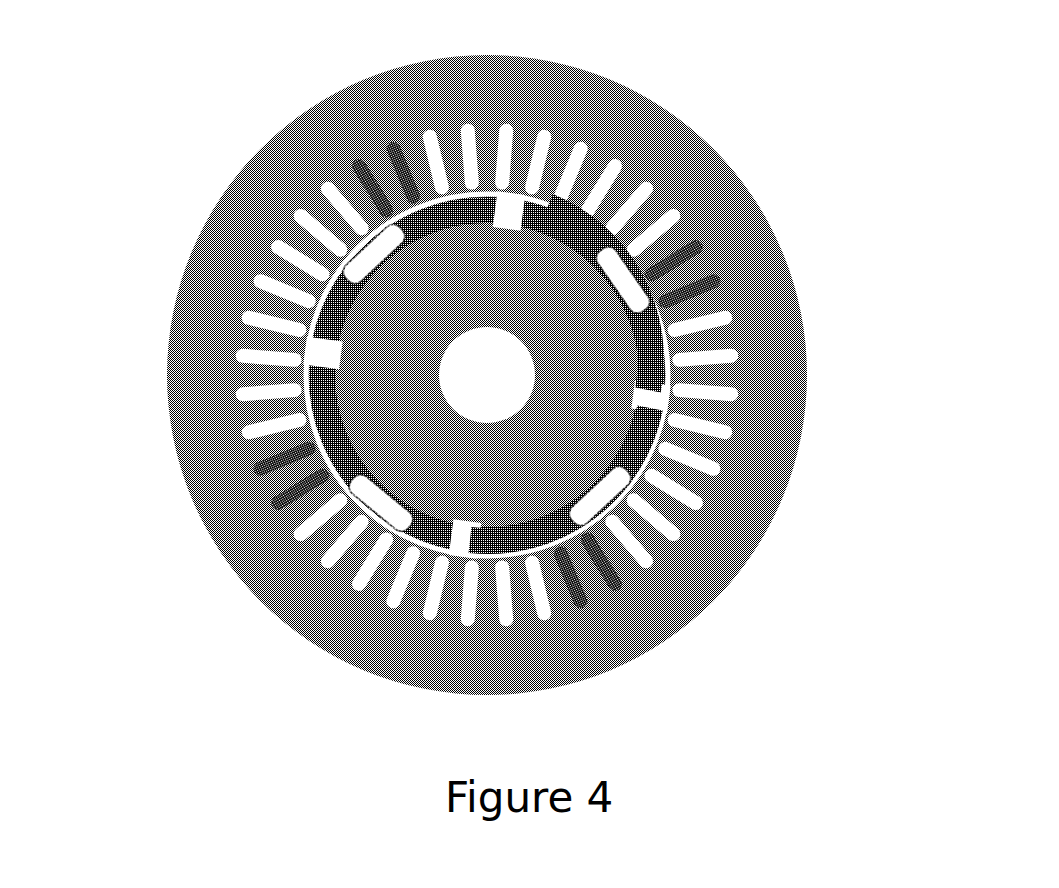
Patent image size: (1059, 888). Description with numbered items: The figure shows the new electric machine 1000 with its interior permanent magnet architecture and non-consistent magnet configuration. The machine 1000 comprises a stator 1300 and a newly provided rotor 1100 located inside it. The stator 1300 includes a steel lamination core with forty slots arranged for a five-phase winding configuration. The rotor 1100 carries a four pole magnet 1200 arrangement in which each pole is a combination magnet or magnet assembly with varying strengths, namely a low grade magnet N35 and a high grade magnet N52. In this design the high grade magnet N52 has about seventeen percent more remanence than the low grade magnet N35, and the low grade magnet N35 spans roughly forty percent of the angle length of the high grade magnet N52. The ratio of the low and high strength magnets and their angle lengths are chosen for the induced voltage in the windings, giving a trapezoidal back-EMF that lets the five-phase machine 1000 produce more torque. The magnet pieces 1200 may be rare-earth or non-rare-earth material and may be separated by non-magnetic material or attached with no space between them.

The electric machine 1000 is at (778, 94).
The rotor 1100 is at (463, 505).
The pole magnet 1200 is at (432, 200).
The stator 1300 is at (187, 253).
The N52 magnet N52 is at (550, 200).
The N35 magnet N35 is at (627, 279).